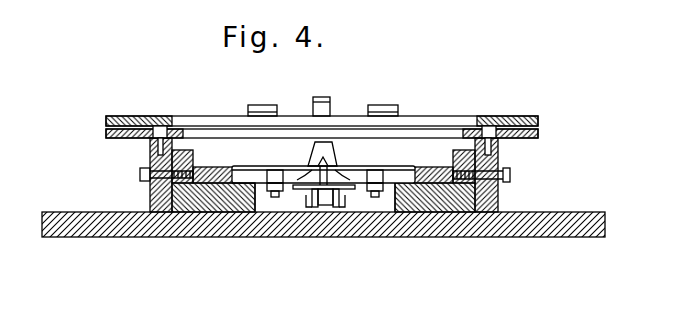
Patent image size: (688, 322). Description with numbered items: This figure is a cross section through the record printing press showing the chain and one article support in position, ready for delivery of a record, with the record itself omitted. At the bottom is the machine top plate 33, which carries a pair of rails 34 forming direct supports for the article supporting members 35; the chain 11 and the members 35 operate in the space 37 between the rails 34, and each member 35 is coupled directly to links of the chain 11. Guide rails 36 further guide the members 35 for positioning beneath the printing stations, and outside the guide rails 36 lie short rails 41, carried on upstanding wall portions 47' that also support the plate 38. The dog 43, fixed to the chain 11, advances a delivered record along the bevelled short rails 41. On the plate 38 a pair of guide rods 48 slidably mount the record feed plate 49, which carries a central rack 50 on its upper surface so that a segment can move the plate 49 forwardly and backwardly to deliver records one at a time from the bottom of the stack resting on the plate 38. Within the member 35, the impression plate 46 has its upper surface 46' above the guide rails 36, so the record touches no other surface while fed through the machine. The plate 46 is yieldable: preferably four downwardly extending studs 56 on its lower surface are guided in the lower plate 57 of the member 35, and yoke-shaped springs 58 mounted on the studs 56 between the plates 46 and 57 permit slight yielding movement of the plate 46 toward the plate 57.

The chain 11 is at (308, 197).
The top plate 33 is at (65, 212).
The rails 34 is at (213, 200).
The article supporting members 35 is at (262, 185).
The guide rails 36 is at (198, 183).
The space 37 is at (397, 185).
The plate 38 is at (540, 130).
The short rails 41 is at (498, 160).
The dog 43 is at (305, 141).
The impression plate 46 is at (333, 136).
The upper surface of impression plate 46' is at (354, 131).
The upstanding wall portions 47' is at (328, 184).
The guide rods 48 is at (248, 110).
The record feed plate 49 is at (353, 114).
The rack 50 is at (332, 110).
The studs 56 is at (399, 183).
The lower plate 57 is at (245, 185).
The yoke-shaped springs 58 is at (278, 175).